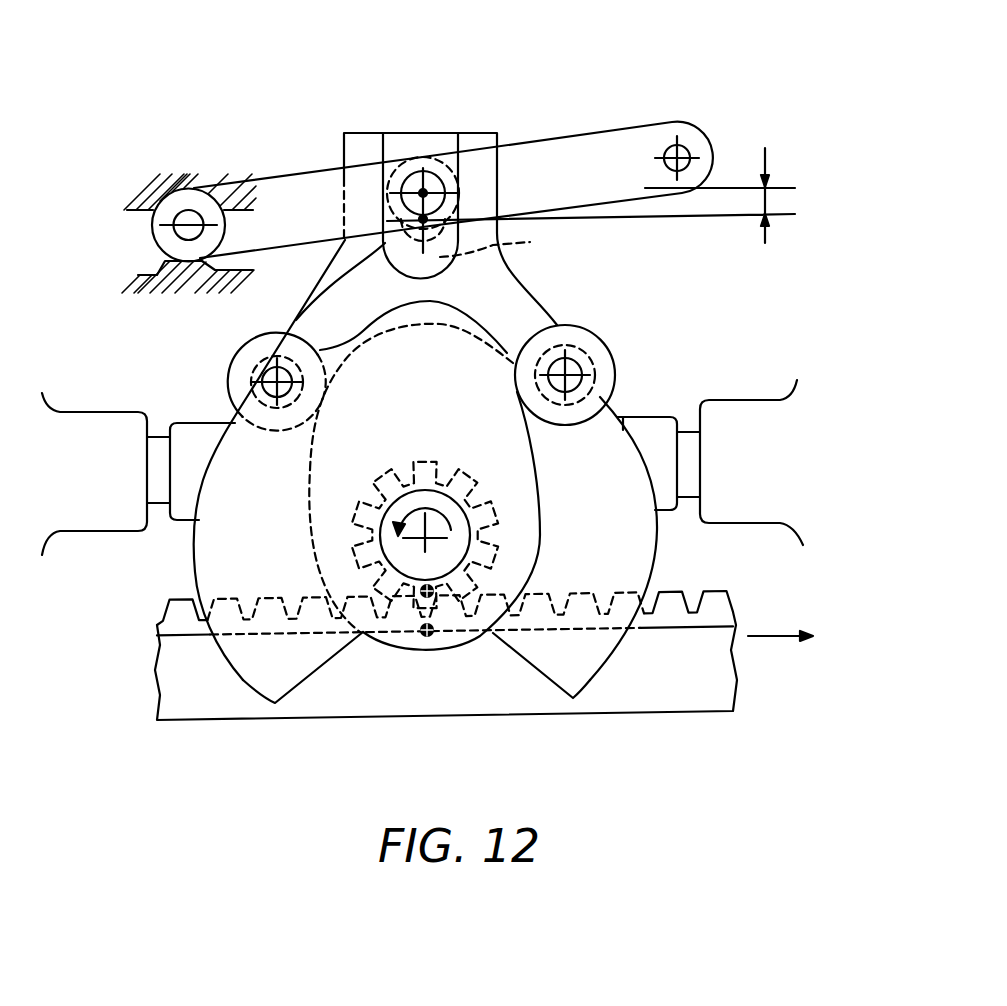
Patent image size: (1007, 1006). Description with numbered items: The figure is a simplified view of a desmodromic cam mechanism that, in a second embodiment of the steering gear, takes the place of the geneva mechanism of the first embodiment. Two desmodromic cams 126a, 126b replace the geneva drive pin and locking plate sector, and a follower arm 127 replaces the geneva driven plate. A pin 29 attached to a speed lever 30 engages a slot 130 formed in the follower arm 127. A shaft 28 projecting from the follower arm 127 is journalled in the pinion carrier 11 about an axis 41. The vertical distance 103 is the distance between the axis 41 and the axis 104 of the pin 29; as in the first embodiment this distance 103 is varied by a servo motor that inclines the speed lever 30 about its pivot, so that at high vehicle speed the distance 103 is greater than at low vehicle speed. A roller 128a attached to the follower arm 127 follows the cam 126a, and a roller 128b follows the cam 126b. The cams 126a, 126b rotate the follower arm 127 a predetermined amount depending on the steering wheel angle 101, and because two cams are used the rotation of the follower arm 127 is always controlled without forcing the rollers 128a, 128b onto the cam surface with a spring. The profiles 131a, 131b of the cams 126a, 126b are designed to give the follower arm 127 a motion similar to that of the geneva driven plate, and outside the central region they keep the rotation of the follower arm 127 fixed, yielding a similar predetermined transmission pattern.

The pinion carrier 11 is at (660, 416).
The shaft 28 is at (484, 240).
The pin 29 is at (456, 163).
The speed lever 30 is at (595, 136).
The axis 41 is at (340, 272).
The steering wheel angle 101 is at (441, 513).
The vertical distance 103 is at (766, 196).
The axis 104 is at (392, 190).
The desmodromic cam 126a is at (196, 554).
The desmodromic cam 126b is at (652, 565).
The follower arm 127 is at (541, 304).
The roller 128a is at (612, 358).
The roller 128b is at (236, 360).
The slot 130 is at (392, 143).
The profile 131a is at (250, 685).
The profile 131b is at (603, 673).